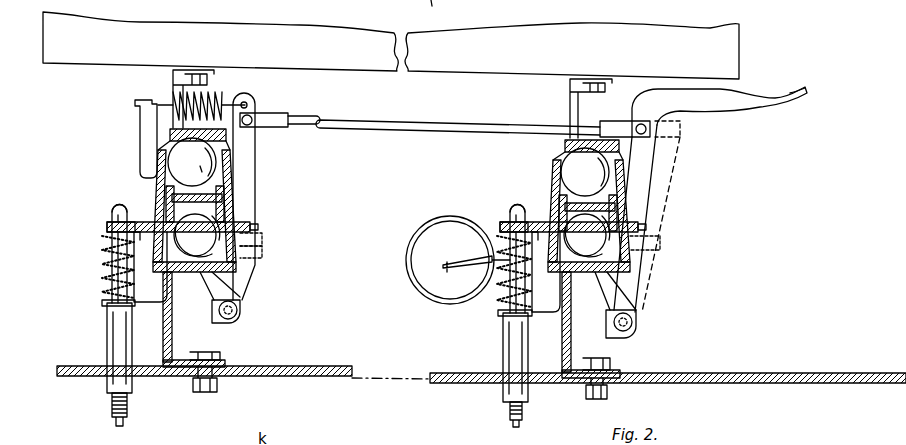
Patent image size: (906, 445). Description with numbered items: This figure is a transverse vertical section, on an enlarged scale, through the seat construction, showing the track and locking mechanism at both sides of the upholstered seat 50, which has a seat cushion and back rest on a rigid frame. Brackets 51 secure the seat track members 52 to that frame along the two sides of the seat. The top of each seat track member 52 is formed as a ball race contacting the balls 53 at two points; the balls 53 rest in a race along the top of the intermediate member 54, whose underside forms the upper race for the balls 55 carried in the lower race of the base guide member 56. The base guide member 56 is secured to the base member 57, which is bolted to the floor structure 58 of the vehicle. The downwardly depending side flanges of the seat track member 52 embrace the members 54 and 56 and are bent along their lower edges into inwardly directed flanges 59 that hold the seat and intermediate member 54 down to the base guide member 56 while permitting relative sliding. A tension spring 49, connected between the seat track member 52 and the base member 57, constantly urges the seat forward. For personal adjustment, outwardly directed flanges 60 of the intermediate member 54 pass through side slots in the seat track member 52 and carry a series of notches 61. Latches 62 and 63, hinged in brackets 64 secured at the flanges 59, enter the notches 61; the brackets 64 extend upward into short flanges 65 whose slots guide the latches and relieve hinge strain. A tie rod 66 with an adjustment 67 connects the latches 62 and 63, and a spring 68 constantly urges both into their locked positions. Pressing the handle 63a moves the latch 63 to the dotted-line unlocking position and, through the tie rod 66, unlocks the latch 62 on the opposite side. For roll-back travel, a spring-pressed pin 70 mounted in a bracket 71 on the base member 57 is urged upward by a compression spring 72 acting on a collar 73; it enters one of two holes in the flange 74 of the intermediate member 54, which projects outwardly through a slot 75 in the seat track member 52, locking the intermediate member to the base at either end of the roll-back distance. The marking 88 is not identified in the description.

The tension spring 49 is at (410, 284).
The upholstered seat 50 is at (706, 32).
The brackets 51 is at (174, 77).
The seat track member 52 is at (232, 150).
The balls 53 is at (174, 162).
The intermediate member 54 is at (222, 200).
The balls 55 is at (392, 235).
The base guide member 56 is at (204, 272).
The base member 57 is at (178, 320).
The floor structure 58 is at (70, 367).
The inwardly directed flanges 59 is at (655, 286).
The outwardly directed flanges 60 is at (248, 224).
The notches 61 is at (254, 235).
The latch 62 is at (252, 101).
The latch 63 is at (647, 106).
The handle 63a is at (775, 98).
The brackets 64 is at (242, 310).
The short flanges 65 is at (256, 247).
The tie rod 66 is at (374, 123).
The adjustment 67 is at (291, 117).
The spring 68 is at (224, 94).
The spring-pressed pin 70 is at (108, 211).
The brackets 71 is at (105, 303).
The compression spring 72 is at (100, 272).
The collar 73 is at (106, 229).
The flange 74 is at (126, 212).
The slot 75 is at (146, 231).
The part 88 is at (286, 442).